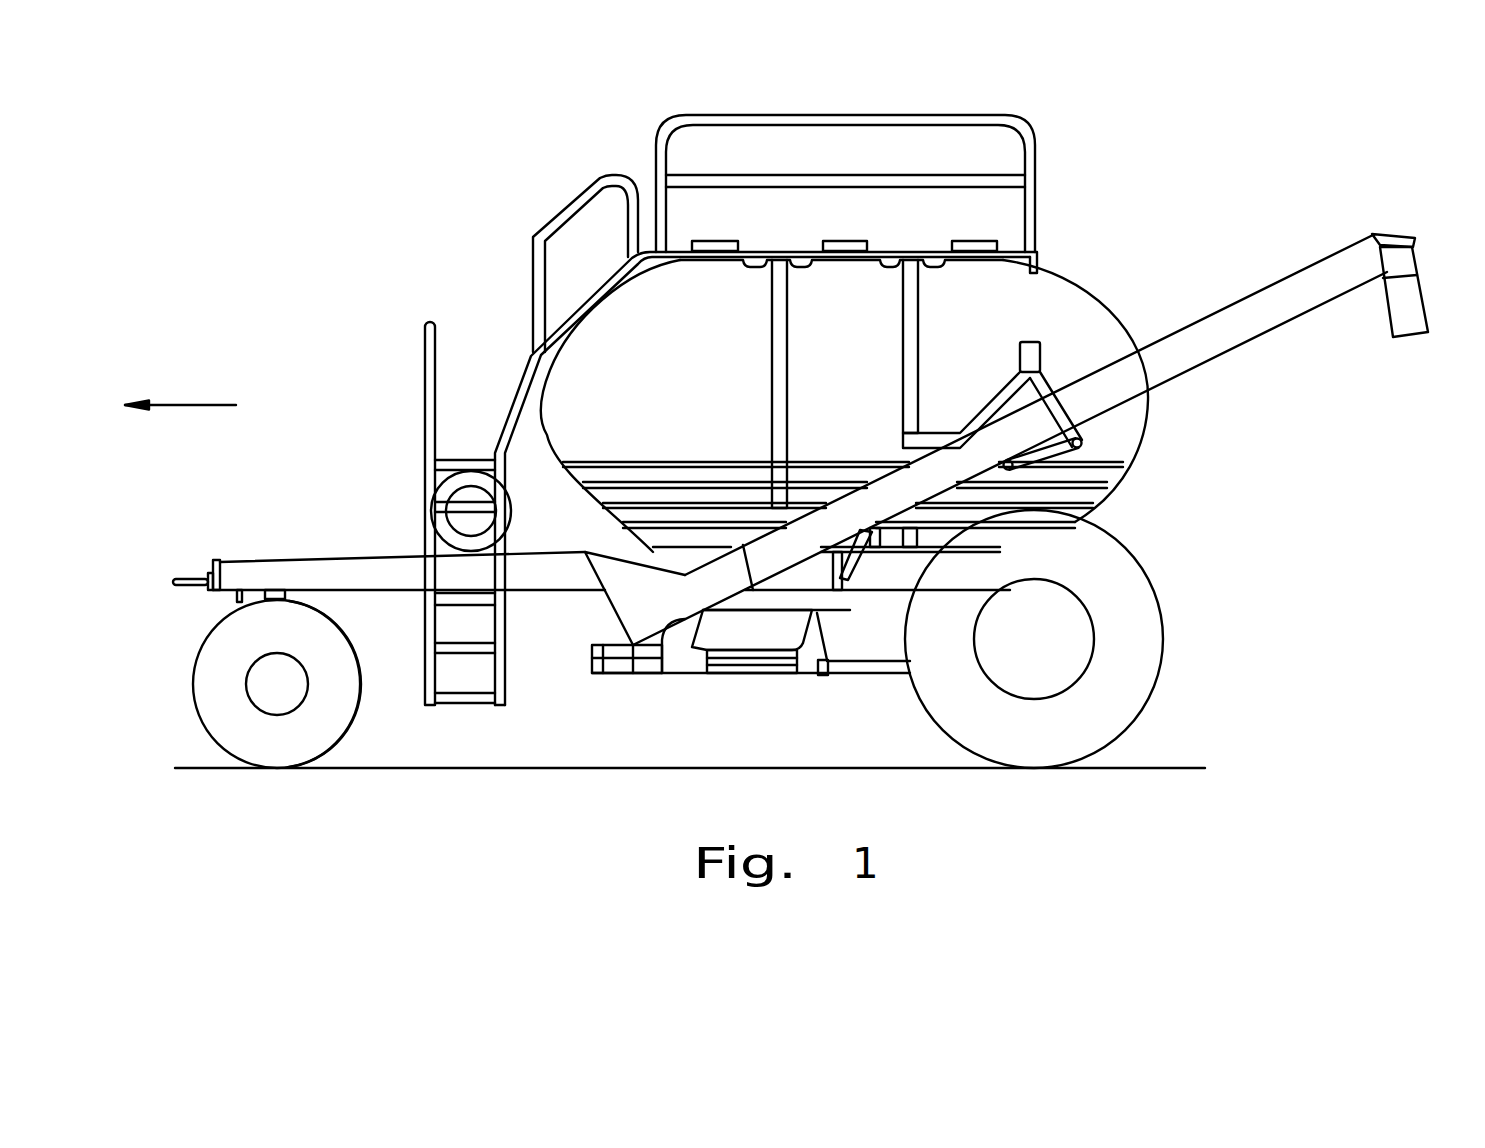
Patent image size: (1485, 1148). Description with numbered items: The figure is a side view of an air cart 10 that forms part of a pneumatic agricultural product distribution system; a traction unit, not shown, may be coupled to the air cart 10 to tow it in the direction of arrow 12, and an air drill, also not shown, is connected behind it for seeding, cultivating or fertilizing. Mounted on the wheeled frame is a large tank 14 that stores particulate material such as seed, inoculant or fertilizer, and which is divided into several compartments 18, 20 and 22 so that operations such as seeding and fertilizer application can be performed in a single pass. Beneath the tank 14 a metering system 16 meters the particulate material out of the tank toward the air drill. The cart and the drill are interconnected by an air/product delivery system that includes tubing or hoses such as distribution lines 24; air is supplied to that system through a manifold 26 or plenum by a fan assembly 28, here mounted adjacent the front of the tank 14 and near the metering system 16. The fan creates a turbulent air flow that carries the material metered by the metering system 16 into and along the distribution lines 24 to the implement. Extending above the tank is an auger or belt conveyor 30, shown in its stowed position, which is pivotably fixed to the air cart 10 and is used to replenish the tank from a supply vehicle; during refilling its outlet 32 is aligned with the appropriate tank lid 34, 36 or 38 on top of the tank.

The air cart 10 is at (822, 441).
The arrow 12 is at (185, 405).
The tank 14 is at (852, 373).
The metering system 16 is at (718, 620).
The compartment 18 is at (994, 340).
The compartment 20 is at (700, 342).
The compartment 22 is at (855, 342).
The distribution lines 24 is at (615, 677).
The manifold 26 is at (670, 673).
The fan assembly 28 is at (520, 483).
The auger or belt conveyor 30 is at (1052, 423).
The outlet 32 is at (1410, 330).
The tank lid 34 is at (977, 241).
The tank lid 36 is at (711, 241).
The tank lid 38 is at (845, 241).